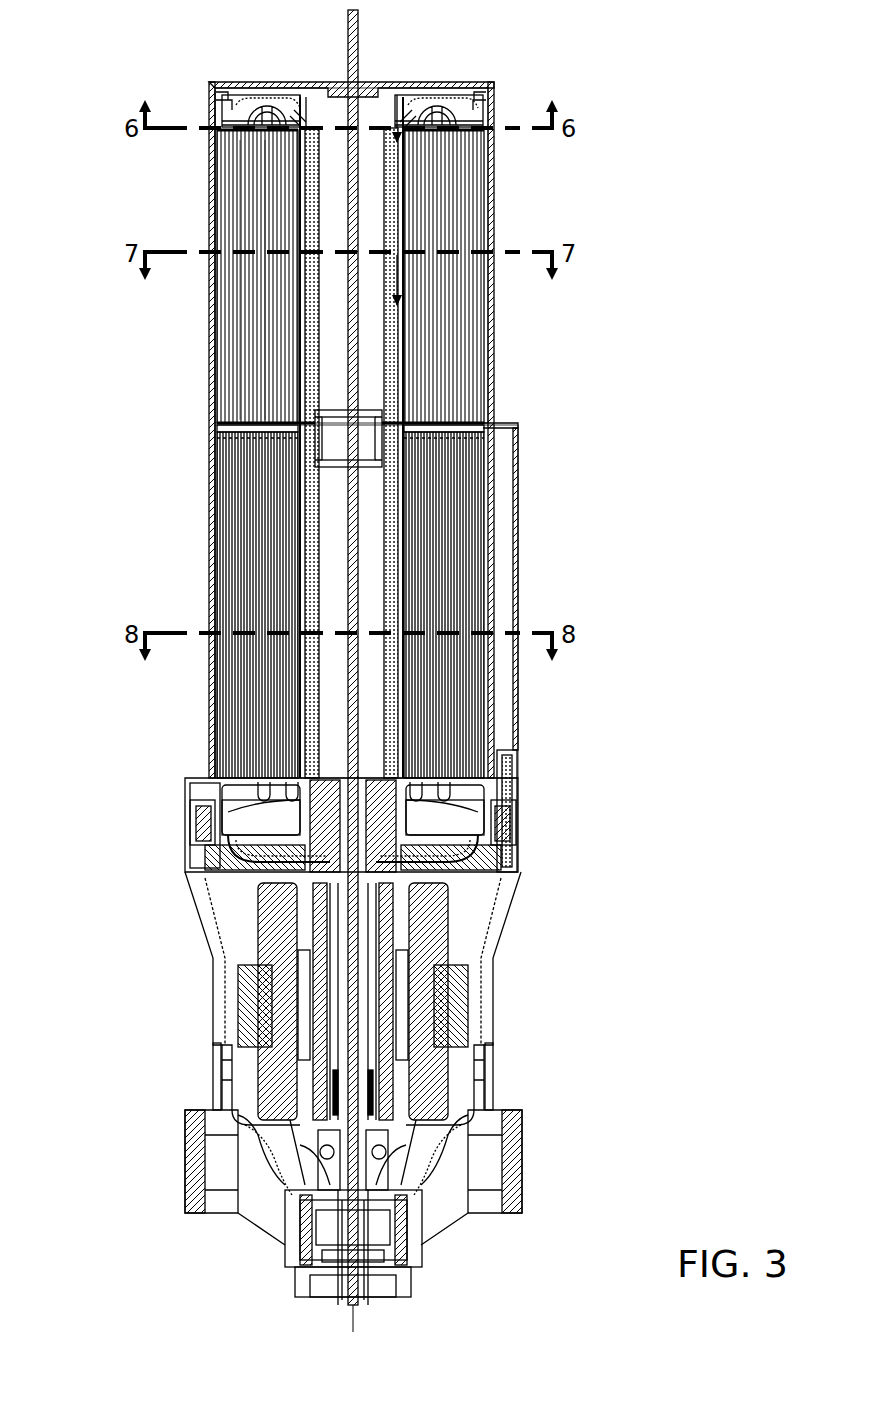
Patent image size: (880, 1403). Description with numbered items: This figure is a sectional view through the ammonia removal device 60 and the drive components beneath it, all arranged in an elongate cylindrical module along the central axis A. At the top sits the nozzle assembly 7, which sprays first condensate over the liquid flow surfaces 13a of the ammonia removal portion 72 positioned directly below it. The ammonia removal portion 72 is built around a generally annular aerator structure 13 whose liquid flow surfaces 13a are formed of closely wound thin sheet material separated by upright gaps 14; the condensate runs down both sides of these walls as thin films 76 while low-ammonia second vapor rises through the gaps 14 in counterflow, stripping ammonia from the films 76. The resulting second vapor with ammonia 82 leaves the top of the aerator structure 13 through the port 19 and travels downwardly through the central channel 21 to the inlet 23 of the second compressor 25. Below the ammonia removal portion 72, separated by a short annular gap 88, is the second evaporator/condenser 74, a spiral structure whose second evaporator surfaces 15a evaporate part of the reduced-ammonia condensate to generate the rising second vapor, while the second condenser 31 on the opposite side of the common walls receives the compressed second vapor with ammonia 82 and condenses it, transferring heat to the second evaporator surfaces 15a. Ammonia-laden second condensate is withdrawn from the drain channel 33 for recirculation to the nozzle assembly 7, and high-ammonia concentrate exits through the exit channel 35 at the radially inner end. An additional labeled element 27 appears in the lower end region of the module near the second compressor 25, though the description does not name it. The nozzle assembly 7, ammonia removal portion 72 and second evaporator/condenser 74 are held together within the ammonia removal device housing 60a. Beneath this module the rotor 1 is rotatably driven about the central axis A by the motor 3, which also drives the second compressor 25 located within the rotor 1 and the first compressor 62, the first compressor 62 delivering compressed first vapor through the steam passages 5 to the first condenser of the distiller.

The rotor 1 is at (310, 1140).
The motor 3 is at (260, 980).
The steam passages 5 is at (206, 890).
The nozzle assembly 7 is at (413, 104).
The aerator structure 13 is at (208, 232).
The liquid flow surfaces 13a is at (222, 197).
The gaps 14 is at (228, 157).
The second evaporator surfaces 15a is at (232, 458).
The port 19 is at (430, 122).
The channel 21 is at (398, 192).
The inlet 23 is at (210, 815).
The second compressor 25 is at (212, 840).
The end cap 27 is at (222, 790).
The second condenser 31 is at (228, 494).
The drain channel 33 is at (262, 790).
The exit channel 35 is at (292, 778).
The ammonia removal device 60 is at (706, 315).
The ammonia removal device housing 60a is at (494, 360).
The first compressor 62 is at (226, 1095).
The ammonia removal portion 72 is at (108, 200).
The second evaporator/condenser 74 is at (108, 587).
The films 76 is at (228, 310).
The second vapor with ammonia 82 is at (400, 278).
The annular gap 88 is at (232, 428).
The central axis A is at (356, 1320).